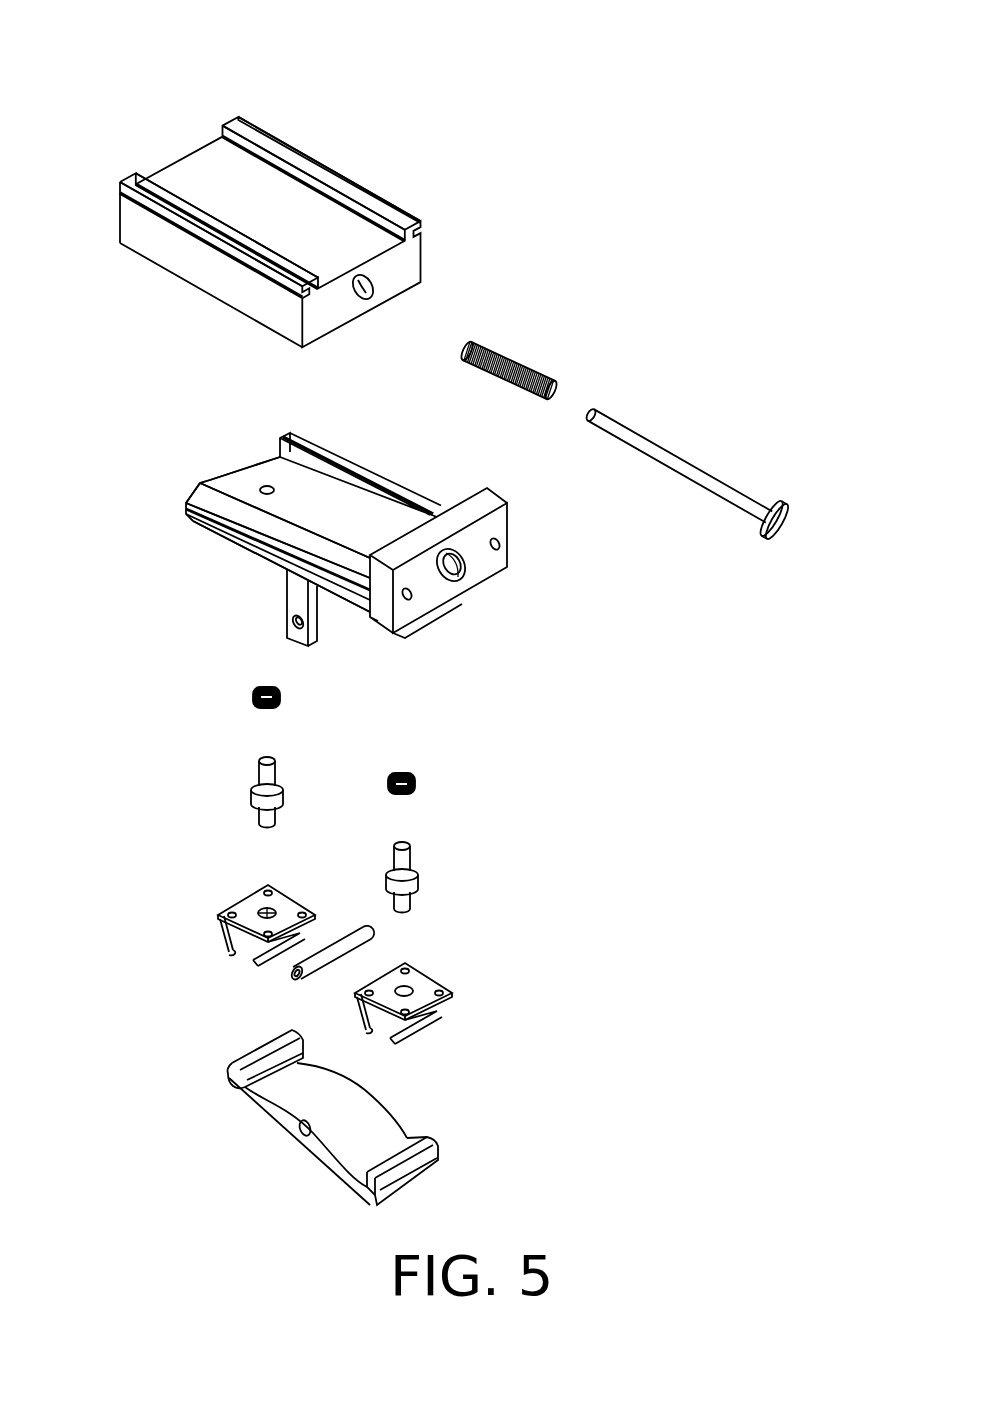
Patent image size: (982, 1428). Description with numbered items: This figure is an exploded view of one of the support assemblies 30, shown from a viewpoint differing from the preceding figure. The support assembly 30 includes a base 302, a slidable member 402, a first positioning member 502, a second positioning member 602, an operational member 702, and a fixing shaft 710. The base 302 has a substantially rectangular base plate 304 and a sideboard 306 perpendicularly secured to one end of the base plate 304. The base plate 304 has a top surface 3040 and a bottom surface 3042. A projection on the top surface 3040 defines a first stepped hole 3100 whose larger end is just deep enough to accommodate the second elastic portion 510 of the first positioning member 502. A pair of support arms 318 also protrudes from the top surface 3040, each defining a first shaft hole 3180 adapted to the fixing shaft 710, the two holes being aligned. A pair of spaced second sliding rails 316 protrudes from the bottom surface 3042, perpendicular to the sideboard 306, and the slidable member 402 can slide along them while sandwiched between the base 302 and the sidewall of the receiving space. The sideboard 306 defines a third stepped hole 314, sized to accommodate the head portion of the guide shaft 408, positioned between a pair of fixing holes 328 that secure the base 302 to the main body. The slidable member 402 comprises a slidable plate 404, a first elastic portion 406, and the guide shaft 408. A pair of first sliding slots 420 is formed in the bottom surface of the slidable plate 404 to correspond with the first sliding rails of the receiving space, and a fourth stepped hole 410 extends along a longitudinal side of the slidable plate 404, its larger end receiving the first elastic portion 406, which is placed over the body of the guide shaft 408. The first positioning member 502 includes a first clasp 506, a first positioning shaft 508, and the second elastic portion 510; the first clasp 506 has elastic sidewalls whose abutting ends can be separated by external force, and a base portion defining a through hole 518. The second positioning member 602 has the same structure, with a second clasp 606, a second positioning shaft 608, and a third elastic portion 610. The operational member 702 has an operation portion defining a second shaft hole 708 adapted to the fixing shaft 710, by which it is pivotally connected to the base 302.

The support assembly 30 is at (224, 60).
The base 302 is at (514, 477).
The base plate 304 is at (88, 437).
The top surface 3040 is at (198, 520).
The bottom surface 3042 is at (247, 487).
The sideboard 306 is at (482, 567).
The first stepped hole 3100 is at (267, 485).
The third stepped hole 314 is at (456, 572).
The second sliding rails 316 is at (358, 470).
The support arms 318 is at (285, 597).
The first shaft hole 3180 is at (292, 623).
The fixing holes 328 is at (500, 545).
The slidable member 402 is at (495, 143).
The slidable plate 404 is at (343, 228).
The first elastic portion 406 is at (500, 350).
The guide shaft 408 is at (622, 433).
The fourth stepped hole 410 is at (366, 296).
The first sliding slots 420 is at (250, 147).
The first positioning member 502 is at (120, 714).
The first clasp 506 is at (255, 905).
The first positioning shaft 508 is at (252, 787).
The second elastic portion 510 is at (252, 706).
The through hole 518 is at (268, 908).
The second positioning member 602 is at (577, 818).
The second clasp 606 is at (435, 990).
The second positioning shaft 608 is at (418, 884).
The third elastic portion 610 is at (416, 790).
The operational member 702 is at (375, 1115).
The second shaft hole 708 is at (300, 1133).
The fixing shaft 710 is at (335, 950).